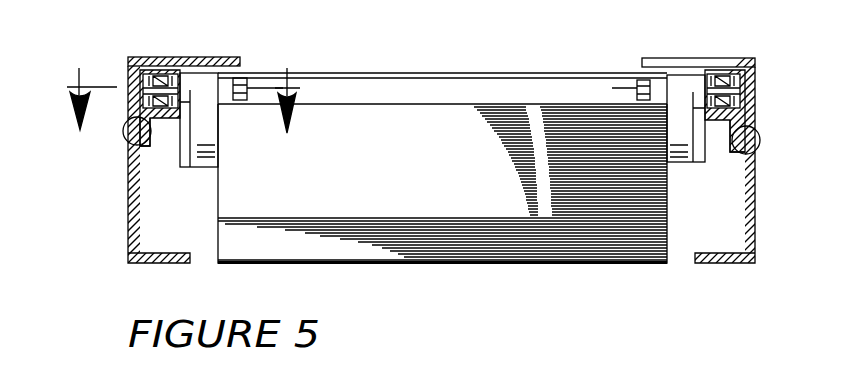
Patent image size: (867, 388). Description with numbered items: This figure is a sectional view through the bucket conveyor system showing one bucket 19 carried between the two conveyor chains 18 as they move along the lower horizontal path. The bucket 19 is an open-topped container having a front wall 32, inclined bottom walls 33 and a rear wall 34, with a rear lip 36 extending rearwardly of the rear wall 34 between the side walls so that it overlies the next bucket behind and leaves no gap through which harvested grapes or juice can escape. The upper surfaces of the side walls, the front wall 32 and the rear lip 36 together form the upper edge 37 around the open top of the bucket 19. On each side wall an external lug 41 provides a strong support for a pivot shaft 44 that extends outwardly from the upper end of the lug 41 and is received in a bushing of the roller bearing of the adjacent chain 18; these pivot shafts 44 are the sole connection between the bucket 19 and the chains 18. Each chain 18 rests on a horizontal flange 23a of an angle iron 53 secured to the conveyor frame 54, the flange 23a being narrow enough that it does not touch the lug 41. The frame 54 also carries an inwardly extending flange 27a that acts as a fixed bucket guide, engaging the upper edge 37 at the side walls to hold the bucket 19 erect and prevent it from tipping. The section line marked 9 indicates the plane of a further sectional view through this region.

The section line 9- 9 is at (184, 105).
The chain 18 is at (157, 76).
The bucket 19 is at (553, 72).
The horizontal flange 23a is at (718, 120).
The inwardly extending flange 27a is at (212, 58).
The front wall 32 is at (468, 165).
The inclined bottom wall 33 is at (548, 245).
The rear wall 34 is at (425, 93).
The rear lip 36 is at (470, 78).
The upper edge 37 is at (262, 73).
The external lug 41 is at (205, 130).
The pivot shaft 44 is at (158, 84).
The angle iron 53 is at (137, 137).
The frame 54 is at (128, 231).